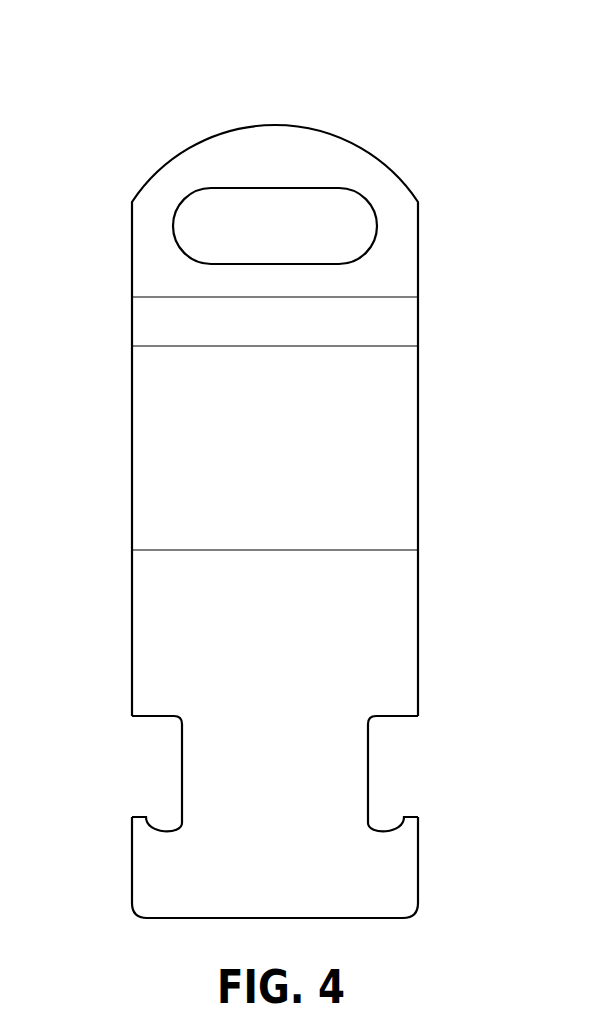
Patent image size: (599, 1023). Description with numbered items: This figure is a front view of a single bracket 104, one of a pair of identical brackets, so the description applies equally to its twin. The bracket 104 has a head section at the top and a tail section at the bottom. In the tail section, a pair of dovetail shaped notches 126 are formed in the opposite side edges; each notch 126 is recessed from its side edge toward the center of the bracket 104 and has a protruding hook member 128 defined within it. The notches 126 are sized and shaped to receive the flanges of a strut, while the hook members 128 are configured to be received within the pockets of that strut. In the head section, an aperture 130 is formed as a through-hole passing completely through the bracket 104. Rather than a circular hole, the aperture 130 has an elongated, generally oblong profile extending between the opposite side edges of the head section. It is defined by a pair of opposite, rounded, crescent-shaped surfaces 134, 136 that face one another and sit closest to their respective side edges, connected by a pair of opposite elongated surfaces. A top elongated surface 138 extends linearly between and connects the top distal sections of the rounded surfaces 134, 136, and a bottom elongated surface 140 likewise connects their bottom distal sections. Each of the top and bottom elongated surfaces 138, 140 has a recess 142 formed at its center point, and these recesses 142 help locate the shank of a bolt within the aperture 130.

The bracket 104 is at (118, 159).
The dovetail shaped notch 126 is at (125, 761).
The protruding hook member 128 is at (138, 822).
The aperture 130 is at (340, 218).
The rounded surface 134 is at (377, 223).
The rounded surface 136 is at (173, 223).
The top elongated surface 138 is at (222, 188).
The bottom elongated surface 140 is at (340, 264).
The recess 142 is at (273, 188).